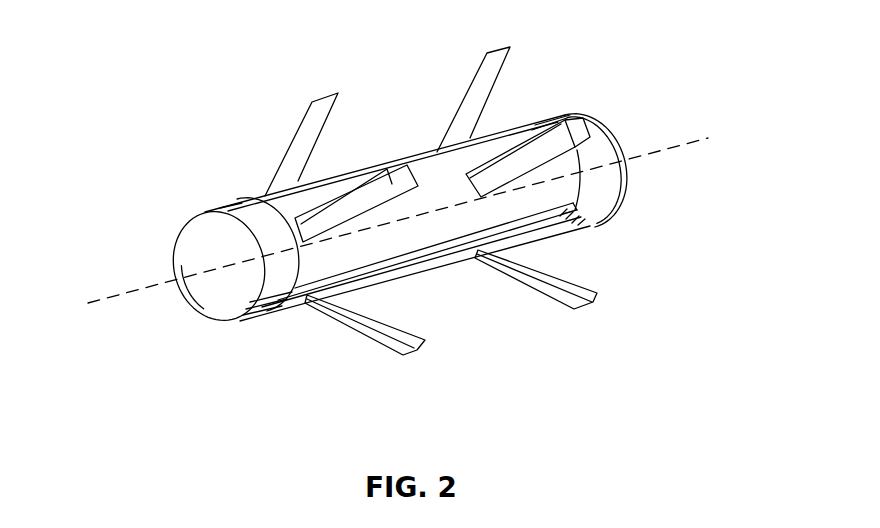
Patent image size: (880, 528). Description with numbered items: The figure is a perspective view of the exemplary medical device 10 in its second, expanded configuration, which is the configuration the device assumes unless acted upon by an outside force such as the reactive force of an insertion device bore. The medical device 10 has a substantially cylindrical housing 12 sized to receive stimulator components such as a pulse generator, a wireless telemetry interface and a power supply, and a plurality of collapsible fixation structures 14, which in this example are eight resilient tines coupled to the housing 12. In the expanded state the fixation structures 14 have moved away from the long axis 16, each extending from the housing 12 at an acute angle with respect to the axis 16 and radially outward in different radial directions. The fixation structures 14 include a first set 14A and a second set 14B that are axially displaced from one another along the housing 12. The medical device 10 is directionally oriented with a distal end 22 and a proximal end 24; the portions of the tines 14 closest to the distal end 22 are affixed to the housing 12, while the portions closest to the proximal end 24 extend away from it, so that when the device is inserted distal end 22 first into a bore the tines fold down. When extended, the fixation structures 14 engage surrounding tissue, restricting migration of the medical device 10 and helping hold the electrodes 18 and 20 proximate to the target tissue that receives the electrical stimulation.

The medical device 10 is at (135, 184).
The housing 12 is at (421, 157).
The fixation structures 14 is at (445, 224).
The first set 14A is at (439, 346).
The second set 14B is at (622, 300).
The long axis 16 is at (658, 140).
The electrode 18 is at (232, 200).
The electrode 20 is at (578, 226).
The distal end 22 is at (158, 262).
The proximal end 24 is at (650, 183).